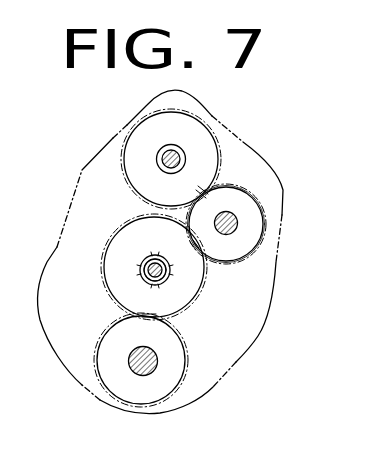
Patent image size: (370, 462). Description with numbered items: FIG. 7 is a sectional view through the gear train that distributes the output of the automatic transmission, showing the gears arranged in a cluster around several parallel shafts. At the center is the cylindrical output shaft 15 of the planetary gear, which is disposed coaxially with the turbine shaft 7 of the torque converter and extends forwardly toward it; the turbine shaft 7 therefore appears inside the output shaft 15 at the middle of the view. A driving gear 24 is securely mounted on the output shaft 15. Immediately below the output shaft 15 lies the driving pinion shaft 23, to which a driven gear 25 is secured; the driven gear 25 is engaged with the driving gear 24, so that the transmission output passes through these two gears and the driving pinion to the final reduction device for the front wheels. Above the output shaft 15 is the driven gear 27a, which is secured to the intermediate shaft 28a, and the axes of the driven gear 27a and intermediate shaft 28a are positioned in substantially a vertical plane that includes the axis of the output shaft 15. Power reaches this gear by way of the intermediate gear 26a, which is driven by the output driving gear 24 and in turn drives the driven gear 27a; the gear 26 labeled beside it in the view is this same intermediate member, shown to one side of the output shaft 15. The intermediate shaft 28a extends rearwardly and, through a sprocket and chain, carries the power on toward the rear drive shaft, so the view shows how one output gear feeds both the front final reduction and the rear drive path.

The turbine shaft 7 is at (145, 273).
The output shaft 15 is at (147, 265).
The driving pinion shaft 23 is at (157, 360).
The driving gear 24 is at (128, 293).
The driven gear 25 is at (122, 390).
The gear 26 is at (233, 198).
The intermediate gear 26a is at (222, 262).
The driven gear 27a is at (188, 140).
The intermediate shaft 28a is at (163, 168).